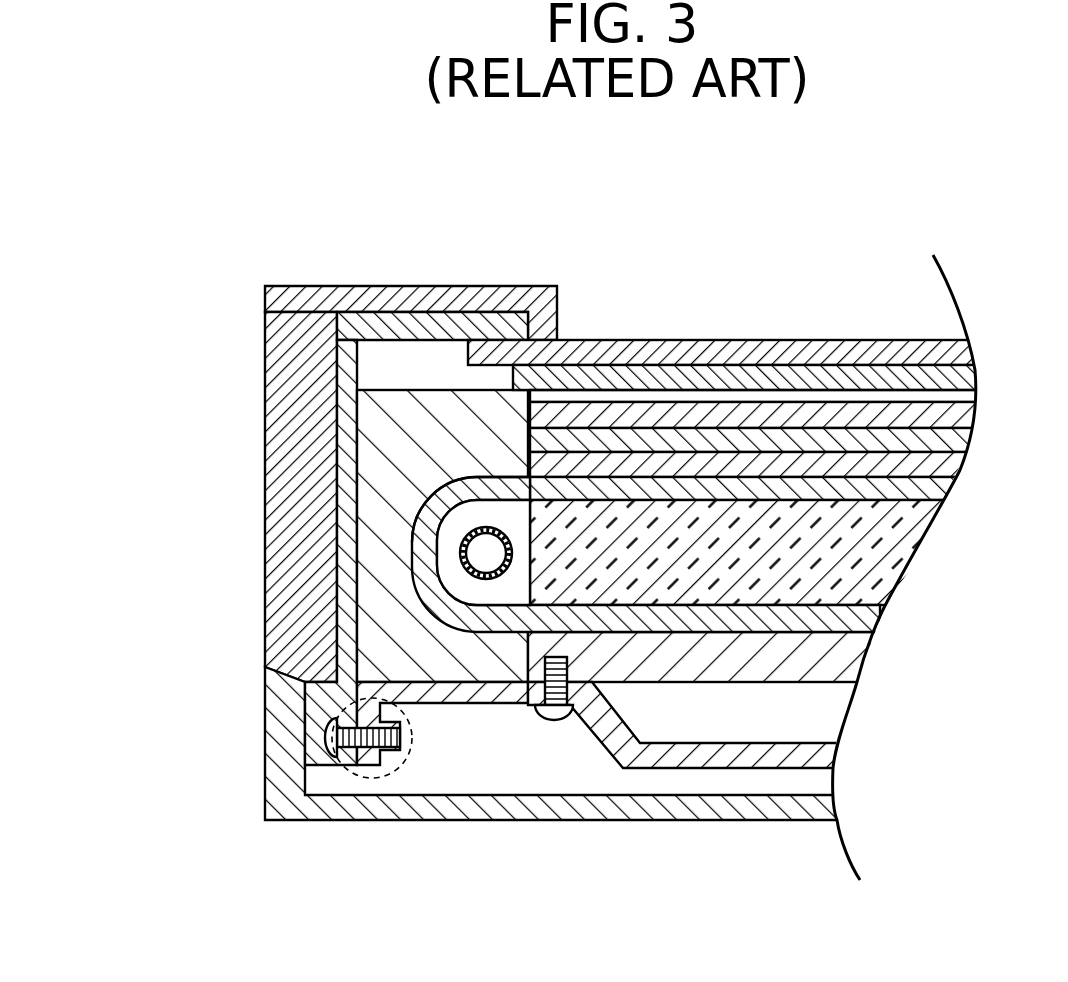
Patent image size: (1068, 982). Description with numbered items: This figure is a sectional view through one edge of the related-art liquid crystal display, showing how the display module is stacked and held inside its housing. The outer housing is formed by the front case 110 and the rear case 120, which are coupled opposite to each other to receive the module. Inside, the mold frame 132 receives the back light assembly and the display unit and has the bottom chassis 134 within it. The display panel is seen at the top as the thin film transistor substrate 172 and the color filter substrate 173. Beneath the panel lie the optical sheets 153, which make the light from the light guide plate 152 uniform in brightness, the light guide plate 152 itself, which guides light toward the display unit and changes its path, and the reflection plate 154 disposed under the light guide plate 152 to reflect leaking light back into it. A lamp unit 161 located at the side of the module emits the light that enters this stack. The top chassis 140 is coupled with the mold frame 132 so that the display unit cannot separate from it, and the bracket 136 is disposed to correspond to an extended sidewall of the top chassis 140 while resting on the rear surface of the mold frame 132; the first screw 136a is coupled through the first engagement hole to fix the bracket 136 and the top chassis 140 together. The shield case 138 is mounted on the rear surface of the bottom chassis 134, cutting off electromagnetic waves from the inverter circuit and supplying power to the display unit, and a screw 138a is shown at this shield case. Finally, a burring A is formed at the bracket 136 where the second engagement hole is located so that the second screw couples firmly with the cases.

The front case 110 is at (307, 300).
The rear case 120 is at (272, 810).
The mold frame 132 is at (407, 438).
The bottom chassis 134 is at (832, 666).
The bracket 136 is at (373, 687).
The first screw 136a is at (322, 748).
The shield case 138 is at (815, 757).
The screw 138a is at (575, 722).
The top chassis 140 is at (347, 553).
The light guide plate 152 is at (886, 556).
The optical sheets 153 is at (987, 407).
The reflection plate 154 is at (737, 615).
The lamp unit 161 is at (450, 476).
The thin film transistor substrate 172 is at (608, 380).
The color filter substrate 173 is at (790, 353).
The burring A is at (402, 768).